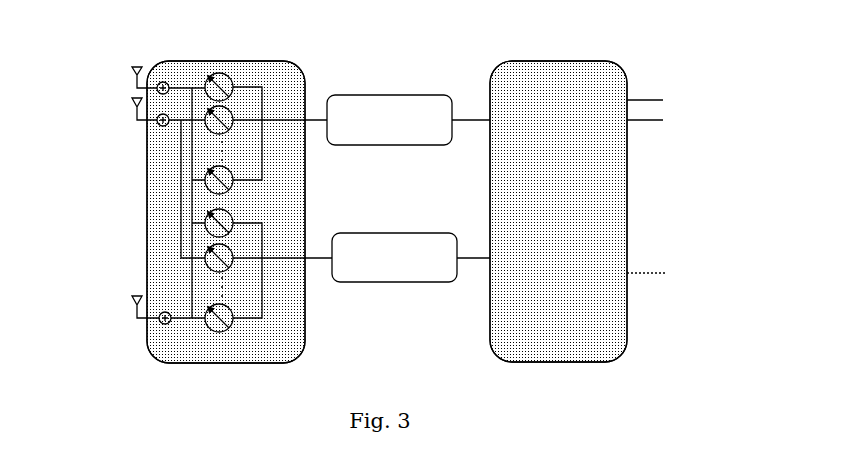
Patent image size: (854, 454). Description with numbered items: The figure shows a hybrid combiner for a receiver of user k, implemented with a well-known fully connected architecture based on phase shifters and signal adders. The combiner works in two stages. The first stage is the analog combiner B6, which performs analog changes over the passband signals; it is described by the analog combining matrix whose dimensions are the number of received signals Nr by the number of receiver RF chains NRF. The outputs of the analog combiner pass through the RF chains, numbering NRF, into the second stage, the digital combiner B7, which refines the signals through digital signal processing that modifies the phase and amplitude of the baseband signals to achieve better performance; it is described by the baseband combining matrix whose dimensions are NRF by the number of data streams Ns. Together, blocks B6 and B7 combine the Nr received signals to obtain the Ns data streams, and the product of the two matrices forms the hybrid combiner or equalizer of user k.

The analog combiner B6 is at (299, 68).
The digital combiner B7 is at (611, 64).
The number of received signals Nr is at (132, 195).
The number of receiver RF chains NRF is at (408, 188).
The number of data streams Ns is at (654, 186).